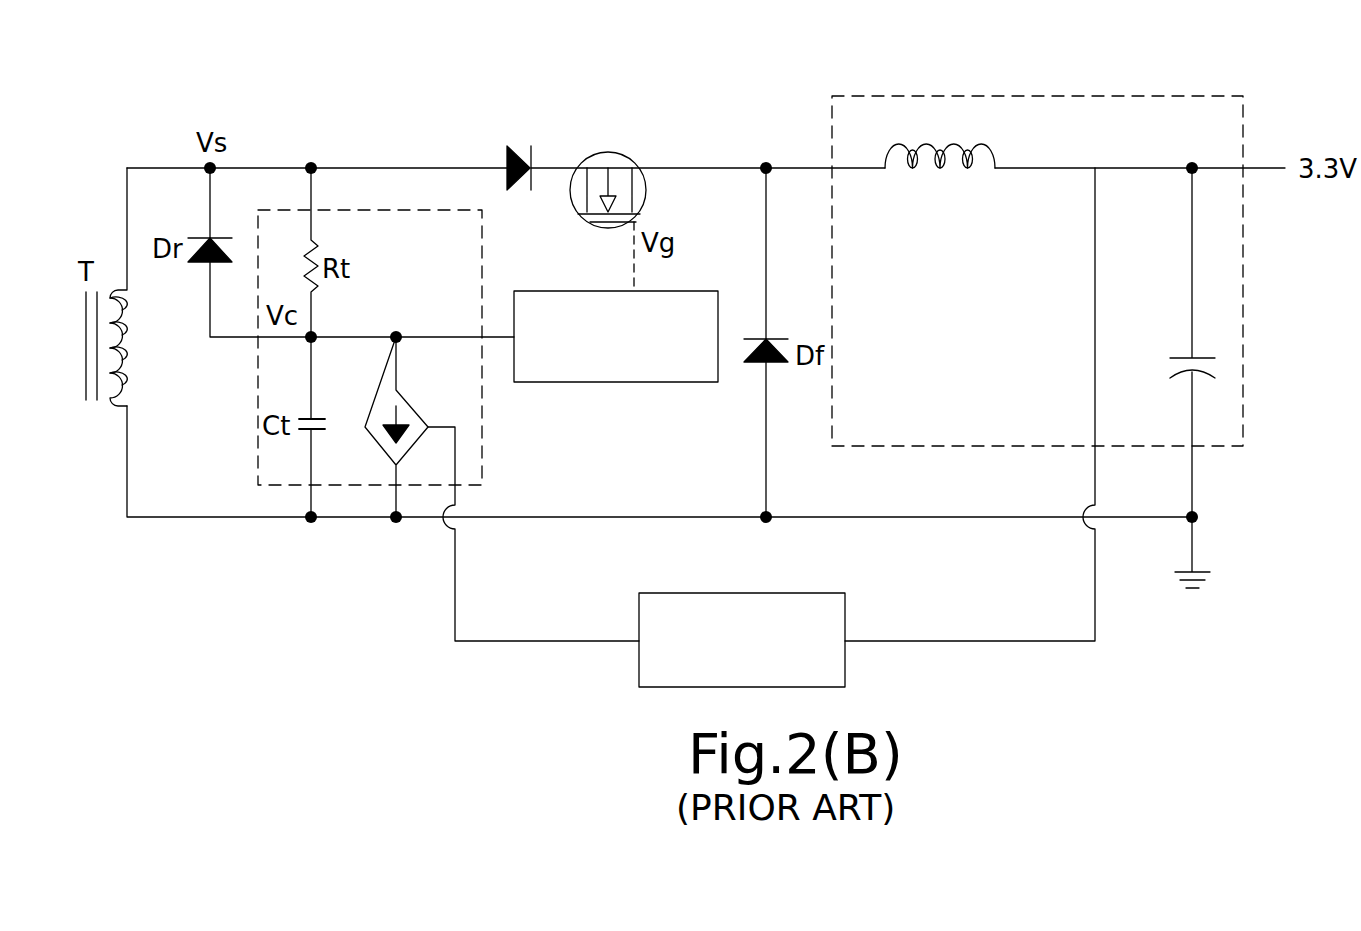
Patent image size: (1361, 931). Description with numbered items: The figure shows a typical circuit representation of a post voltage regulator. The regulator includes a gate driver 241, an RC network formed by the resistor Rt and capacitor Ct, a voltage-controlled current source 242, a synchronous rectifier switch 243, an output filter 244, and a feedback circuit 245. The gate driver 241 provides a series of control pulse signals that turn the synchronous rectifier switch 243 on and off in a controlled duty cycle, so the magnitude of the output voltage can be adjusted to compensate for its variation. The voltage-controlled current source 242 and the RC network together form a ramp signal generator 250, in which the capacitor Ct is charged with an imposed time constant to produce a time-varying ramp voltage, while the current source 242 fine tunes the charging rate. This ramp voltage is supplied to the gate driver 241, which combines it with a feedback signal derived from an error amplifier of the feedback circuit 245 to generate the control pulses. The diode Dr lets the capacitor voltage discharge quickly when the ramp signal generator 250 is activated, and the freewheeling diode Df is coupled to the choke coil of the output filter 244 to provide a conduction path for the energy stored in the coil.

The gate driver 241 is at (617, 382).
The voltage-controlled current source 242 is at (407, 398).
The synchronous rectifier switch 243 is at (612, 160).
The output filter 244 is at (1040, 97).
The feedback circuit 245 is at (742, 593).
The ramp signal generator 250 is at (268, 388).